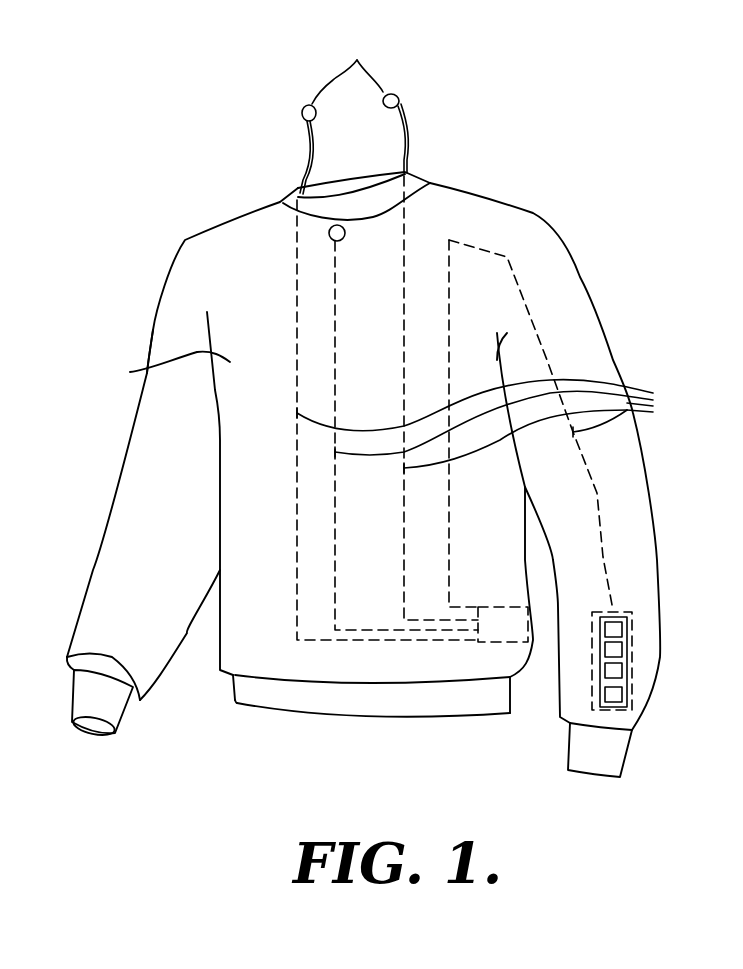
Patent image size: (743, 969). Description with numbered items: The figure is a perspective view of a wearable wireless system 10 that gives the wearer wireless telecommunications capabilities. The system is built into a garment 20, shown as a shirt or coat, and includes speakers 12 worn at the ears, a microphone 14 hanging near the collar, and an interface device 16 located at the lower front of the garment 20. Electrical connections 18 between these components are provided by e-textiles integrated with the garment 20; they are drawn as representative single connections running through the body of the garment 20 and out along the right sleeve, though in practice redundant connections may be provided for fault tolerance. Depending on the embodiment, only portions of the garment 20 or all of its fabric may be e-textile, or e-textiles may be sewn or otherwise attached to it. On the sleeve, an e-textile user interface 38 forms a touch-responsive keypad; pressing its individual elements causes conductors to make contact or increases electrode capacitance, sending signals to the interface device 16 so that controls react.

The wearable wireless system 10 is at (167, 177).
The speakers 12 is at (357, 60).
The microphone 14 is at (329, 229).
The interface device 16 is at (497, 643).
The electrical connections 18 is at (494, 426).
The garment 20 is at (147, 373).
The e-textile user interface 38 is at (632, 638).